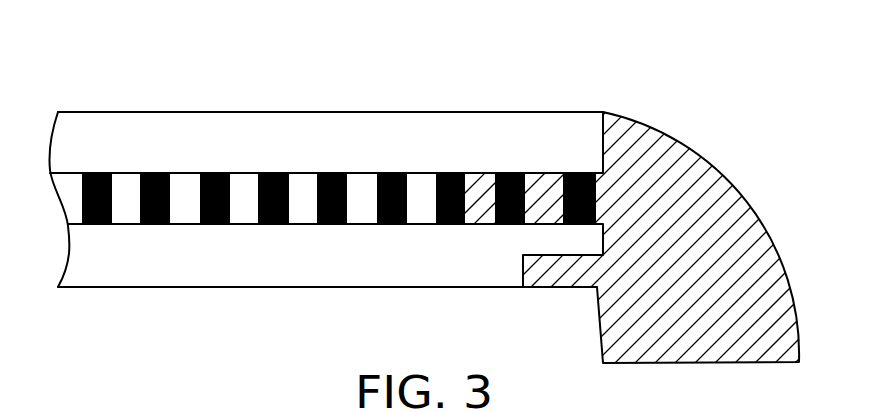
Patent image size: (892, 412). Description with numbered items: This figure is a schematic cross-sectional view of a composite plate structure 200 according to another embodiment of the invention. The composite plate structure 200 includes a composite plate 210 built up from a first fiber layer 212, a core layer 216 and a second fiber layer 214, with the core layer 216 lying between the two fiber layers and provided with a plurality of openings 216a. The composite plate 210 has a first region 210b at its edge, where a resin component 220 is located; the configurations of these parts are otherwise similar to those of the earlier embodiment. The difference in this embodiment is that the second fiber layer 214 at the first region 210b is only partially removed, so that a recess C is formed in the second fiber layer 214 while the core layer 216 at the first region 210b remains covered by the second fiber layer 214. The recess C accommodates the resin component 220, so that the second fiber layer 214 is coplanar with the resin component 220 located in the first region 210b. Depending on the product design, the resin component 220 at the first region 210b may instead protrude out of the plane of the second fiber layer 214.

The composite plate structure 200 is at (470, 206).
The composite plate 210 is at (326, 172).
The first region 210b is at (597, 292).
The first fiber layer 212 is at (245, 137).
The second fiber layer 214 is at (362, 255).
The core layer 216 is at (272, 172).
The openings 216a is at (127, 196).
The resin component 220 is at (708, 190).
The recess C is at (556, 267).